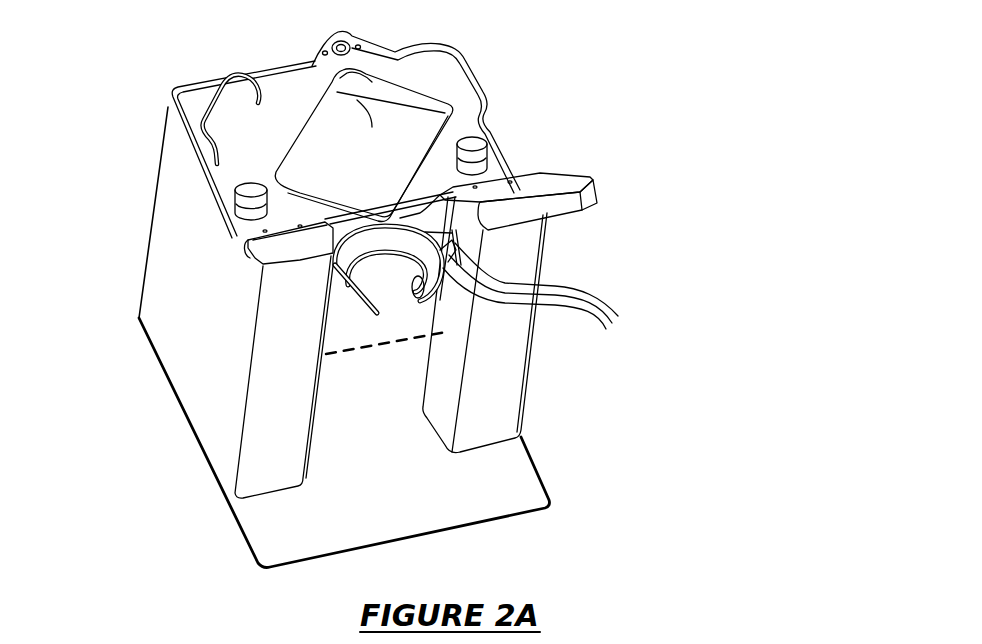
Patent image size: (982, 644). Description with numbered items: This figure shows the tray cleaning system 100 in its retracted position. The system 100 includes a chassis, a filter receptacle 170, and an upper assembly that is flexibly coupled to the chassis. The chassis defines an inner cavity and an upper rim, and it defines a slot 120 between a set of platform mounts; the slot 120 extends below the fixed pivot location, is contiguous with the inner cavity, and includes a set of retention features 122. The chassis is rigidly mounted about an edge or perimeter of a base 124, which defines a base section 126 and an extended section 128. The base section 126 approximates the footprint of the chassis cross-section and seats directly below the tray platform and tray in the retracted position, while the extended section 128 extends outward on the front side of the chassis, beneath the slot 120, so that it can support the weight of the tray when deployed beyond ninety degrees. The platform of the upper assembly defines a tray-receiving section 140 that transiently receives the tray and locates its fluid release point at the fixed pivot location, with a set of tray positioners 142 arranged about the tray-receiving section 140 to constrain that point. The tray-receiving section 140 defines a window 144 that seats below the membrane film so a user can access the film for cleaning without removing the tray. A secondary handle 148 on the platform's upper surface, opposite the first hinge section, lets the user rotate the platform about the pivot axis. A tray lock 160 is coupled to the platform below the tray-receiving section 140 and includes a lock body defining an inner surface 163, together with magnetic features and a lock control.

The tray cleaning system 100 is at (575, 83).
The slot 120 is at (367, 350).
The set of retention features 122 is at (540, 294).
The base 124 is at (294, 337).
The base section 126 is at (195, 436).
The extended section 128 is at (278, 531).
The tray-receiving section 140 is at (290, 61).
The set of tray positioners 142 is at (247, 190).
The window 144 is at (295, 125).
The secondary handle 148 is at (218, 86).
The tray lock 160 is at (350, 39).
The inner surface 163 is at (341, 48).
The filter receptacle 170 is at (333, 297).